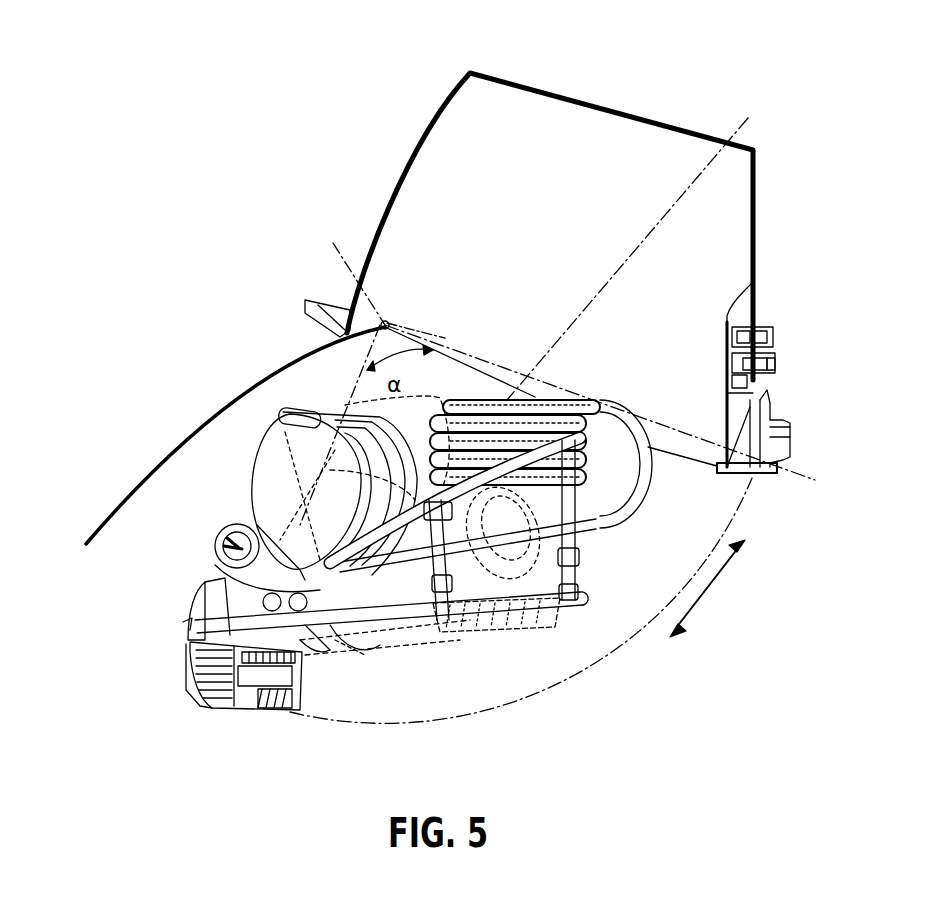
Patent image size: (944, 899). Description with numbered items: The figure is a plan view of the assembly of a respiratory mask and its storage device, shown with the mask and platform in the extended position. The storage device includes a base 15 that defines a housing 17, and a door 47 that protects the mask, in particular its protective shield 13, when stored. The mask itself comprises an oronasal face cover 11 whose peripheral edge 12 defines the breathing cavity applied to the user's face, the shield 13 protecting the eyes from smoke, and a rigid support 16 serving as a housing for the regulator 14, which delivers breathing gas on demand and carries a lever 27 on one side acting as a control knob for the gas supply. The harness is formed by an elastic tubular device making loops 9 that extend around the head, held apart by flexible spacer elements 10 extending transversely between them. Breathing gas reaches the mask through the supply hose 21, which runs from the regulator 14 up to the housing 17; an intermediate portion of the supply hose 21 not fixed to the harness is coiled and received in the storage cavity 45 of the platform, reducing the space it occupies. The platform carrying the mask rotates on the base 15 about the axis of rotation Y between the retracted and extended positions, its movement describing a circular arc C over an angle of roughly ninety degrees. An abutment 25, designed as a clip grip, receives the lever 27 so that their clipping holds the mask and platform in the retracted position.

The loop 9 is at (497, 603).
The flexible spacer element 10 is at (567, 543).
The oronasal face cover 11 is at (315, 630).
The peripheral edge 12 is at (340, 630).
The protective shield 13 is at (280, 502).
The regulator 14 is at (262, 672).
The base 15 is at (307, 302).
The rigid support 16 is at (178, 640).
The housing 17 is at (612, 157).
The supply hose 21 is at (600, 400).
The abutment 25 is at (752, 473).
The lever 27 is at (195, 697).
The storage cavity 45 is at (644, 246).
The door 47 is at (237, 393).
The circular arc C is at (440, 720).
The axis of rotation Y is at (342, 373).